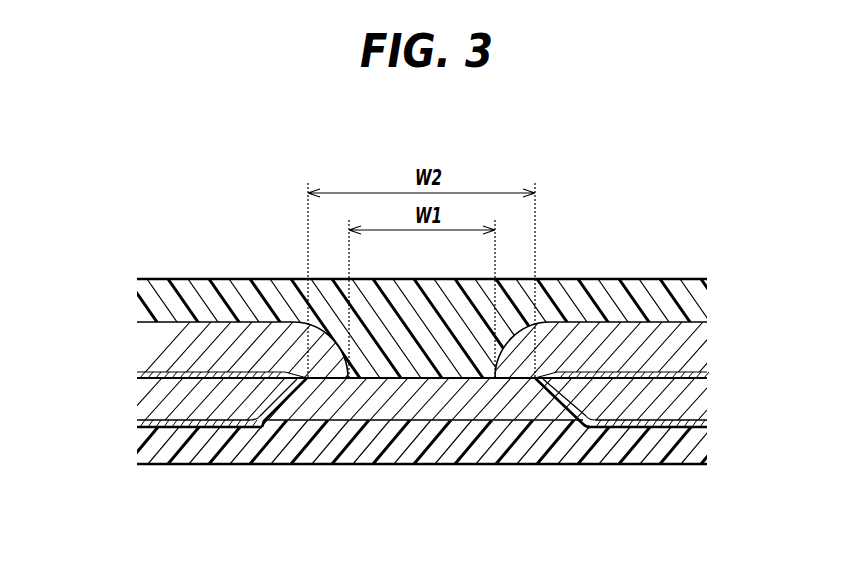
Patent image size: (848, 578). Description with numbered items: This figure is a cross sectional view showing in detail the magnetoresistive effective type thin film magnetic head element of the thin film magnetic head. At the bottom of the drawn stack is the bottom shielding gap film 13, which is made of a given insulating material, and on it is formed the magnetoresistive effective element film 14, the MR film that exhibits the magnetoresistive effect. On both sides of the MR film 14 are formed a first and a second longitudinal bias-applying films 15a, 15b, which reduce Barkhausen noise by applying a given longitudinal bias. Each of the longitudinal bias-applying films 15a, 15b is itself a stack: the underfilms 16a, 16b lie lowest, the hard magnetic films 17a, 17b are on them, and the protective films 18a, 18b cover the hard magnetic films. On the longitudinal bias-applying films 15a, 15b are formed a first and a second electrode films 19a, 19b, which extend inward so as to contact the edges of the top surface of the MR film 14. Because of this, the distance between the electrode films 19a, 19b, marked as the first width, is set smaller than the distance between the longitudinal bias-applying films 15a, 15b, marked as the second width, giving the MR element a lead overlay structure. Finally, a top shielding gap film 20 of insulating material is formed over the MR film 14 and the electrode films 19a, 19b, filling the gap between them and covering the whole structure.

The bottom shielding gap film 13 is at (490, 432).
The magnetoresistive effective element film 14 is at (402, 403).
The first longitudinal bias-applying film 15a is at (728, 394).
The second longitudinal bias-applying film 15b is at (114, 412).
The underfilm 16a is at (640, 424).
The underfilm 16b is at (136, 441).
The hard magnetic film 17a is at (685, 408).
The hard magnetic film 17b is at (157, 384).
The protective film 18a is at (695, 362).
The protective film 18b is at (157, 351).
The first electrode film 19a is at (645, 342).
The second electrode film 19b is at (234, 350).
The top shielding gap film 20 is at (581, 297).